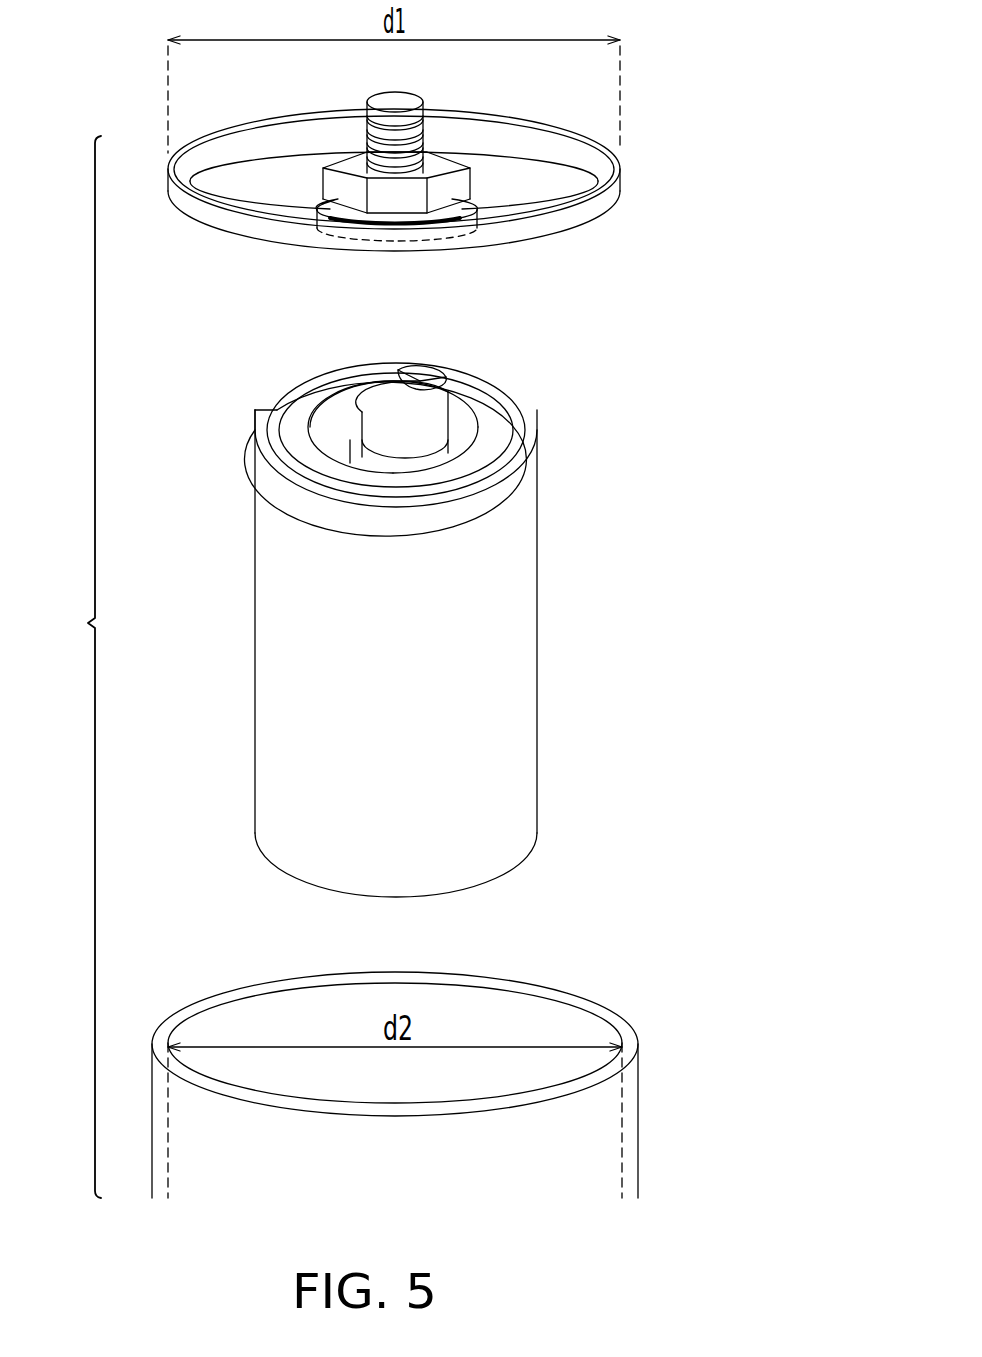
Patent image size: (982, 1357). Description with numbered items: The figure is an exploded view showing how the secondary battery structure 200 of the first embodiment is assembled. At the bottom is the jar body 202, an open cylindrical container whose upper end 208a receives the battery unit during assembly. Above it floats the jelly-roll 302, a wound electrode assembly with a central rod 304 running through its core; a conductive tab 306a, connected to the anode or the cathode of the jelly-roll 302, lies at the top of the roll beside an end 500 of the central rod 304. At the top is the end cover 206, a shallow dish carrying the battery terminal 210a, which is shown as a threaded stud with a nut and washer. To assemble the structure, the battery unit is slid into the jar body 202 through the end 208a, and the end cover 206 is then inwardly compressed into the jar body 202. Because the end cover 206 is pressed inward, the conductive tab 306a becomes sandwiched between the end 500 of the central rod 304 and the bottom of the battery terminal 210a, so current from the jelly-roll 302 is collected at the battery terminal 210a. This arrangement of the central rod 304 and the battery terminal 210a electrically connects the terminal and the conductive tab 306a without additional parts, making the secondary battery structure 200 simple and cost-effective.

The secondary battery structure 200 is at (72, 667).
The jar body 202 is at (638, 1120).
The end cover 206 is at (608, 199).
The end of jar body 208a is at (511, 1026).
The battery terminal 210a is at (410, 100).
The jelly-roll 302 is at (537, 621).
The central rod 304 is at (430, 432).
The conductive tab 306a is at (357, 388).
The end of central rod 500 is at (437, 381).